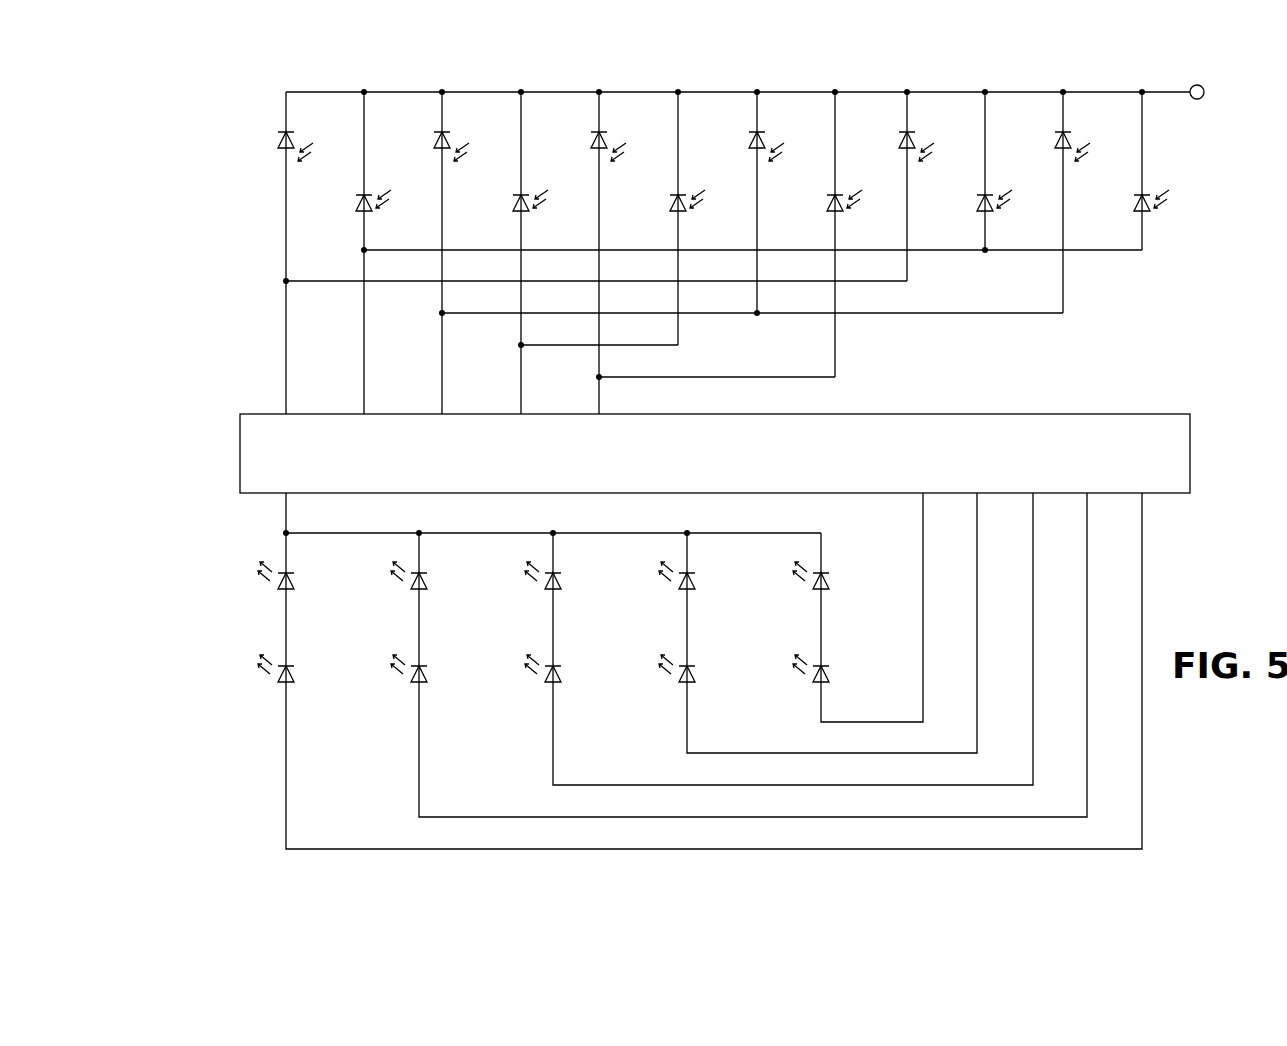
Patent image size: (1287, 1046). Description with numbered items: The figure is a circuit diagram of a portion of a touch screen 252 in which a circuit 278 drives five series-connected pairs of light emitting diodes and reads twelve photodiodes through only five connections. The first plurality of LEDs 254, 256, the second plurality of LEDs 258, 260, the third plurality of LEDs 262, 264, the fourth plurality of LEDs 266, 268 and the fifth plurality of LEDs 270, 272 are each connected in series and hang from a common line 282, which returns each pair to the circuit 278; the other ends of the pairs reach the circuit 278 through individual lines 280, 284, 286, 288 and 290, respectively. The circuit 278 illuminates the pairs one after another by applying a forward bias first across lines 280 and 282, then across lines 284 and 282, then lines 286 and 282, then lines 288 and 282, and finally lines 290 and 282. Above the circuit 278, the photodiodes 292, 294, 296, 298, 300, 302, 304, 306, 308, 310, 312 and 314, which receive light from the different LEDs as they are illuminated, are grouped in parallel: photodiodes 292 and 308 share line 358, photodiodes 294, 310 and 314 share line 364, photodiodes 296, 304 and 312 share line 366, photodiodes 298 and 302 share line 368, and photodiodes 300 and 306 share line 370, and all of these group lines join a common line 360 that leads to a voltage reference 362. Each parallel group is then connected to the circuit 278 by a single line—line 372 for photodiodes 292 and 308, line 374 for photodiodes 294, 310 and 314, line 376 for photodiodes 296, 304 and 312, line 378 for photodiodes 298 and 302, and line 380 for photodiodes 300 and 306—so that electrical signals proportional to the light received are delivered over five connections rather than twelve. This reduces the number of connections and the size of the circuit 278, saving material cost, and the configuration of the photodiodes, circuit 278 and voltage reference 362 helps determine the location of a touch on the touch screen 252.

The touch screen 252 is at (196, 124).
The line 360 is at (286, 92).
The voltage reference 362 is at (1205, 92).
The photodiode 292 is at (278, 136).
The photodiode 294 is at (356, 198).
The photodiode 296 is at (434, 136).
The photodiode 298 is at (513, 198).
The photodiode 300 is at (591, 136).
The photodiode 302 is at (670, 198).
The photodiode 304 is at (749, 136).
The photodiode 306 is at (827, 198).
The photodiode 308 is at (899, 136).
The photodiode 310 is at (977, 198).
The photodiode 312 is at (1055, 136).
The photodiode 314 is at (1134, 198).
The line 364 is at (1118, 252).
The line 358 is at (885, 283).
The line 366 is at (1045, 315).
The line 368 is at (655, 347).
The line 370 is at (812, 379).
The circuit 278 is at (732, 467).
The line 372 is at (282, 400).
The line 374 is at (360, 400).
The line 376 is at (438, 400).
The line 378 is at (517, 400).
The line 380 is at (595, 400).
The line 290 is at (921, 507).
The line 288 is at (975, 507).
The line 286 is at (1031, 507).
The line 284 is at (1085, 507).
The line 280 is at (1140, 507).
The line 282 is at (284, 512).
The light emitting diode 254 is at (296, 583).
The light emitting diode 256 is at (296, 676).
The light emitting diode 258 is at (429, 583).
The light emitting diode 260 is at (429, 676).
The light emitting diode 262 is at (563, 583).
The light emitting diode 264 is at (563, 676).
The light emitting diode 266 is at (697, 583).
The light emitting diode 268 is at (697, 676).
The light emitting diode 270 is at (831, 583).
The light emitting diode 272 is at (831, 676).